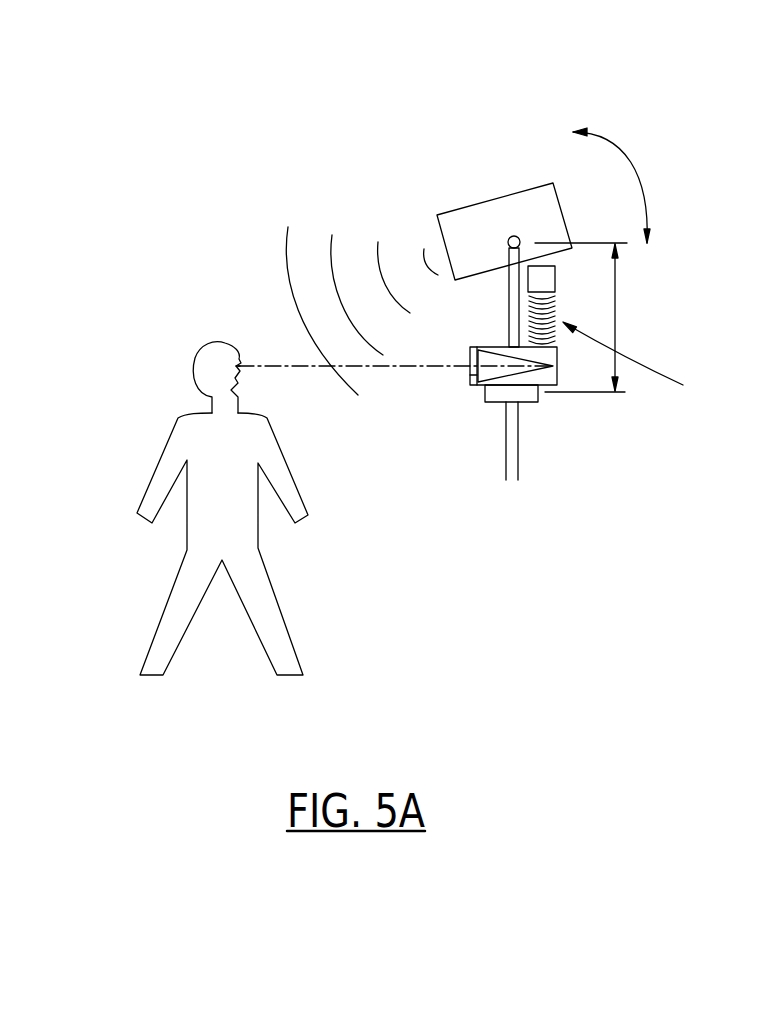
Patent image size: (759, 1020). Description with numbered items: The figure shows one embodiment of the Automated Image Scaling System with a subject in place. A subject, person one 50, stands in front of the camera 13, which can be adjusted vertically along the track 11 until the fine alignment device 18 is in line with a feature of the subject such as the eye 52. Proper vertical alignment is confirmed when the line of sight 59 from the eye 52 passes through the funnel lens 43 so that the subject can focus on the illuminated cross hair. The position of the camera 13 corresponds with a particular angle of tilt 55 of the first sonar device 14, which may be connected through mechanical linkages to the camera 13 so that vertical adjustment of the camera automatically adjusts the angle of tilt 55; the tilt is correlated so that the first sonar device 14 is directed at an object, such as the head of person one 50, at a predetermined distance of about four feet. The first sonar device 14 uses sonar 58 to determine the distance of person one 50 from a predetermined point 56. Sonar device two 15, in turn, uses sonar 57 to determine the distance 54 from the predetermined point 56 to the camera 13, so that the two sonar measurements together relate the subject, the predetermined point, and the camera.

The track 11 is at (508, 457).
The camera 13 is at (523, 398).
The first sonar device 14 is at (475, 242).
The sonar device two 15 is at (543, 280).
The fine alignment device 18 is at (543, 382).
The funnel lens 43 is at (470, 375).
The person one 50 is at (237, 522).
The eye 52 is at (238, 367).
The distance 54 is at (615, 317).
The angle of tilt 55 is at (633, 170).
The predetermined point 56 is at (512, 233).
The sonar 57 is at (644, 363).
The sonar 58 is at (310, 190).
The line of sight 59 is at (395, 367).